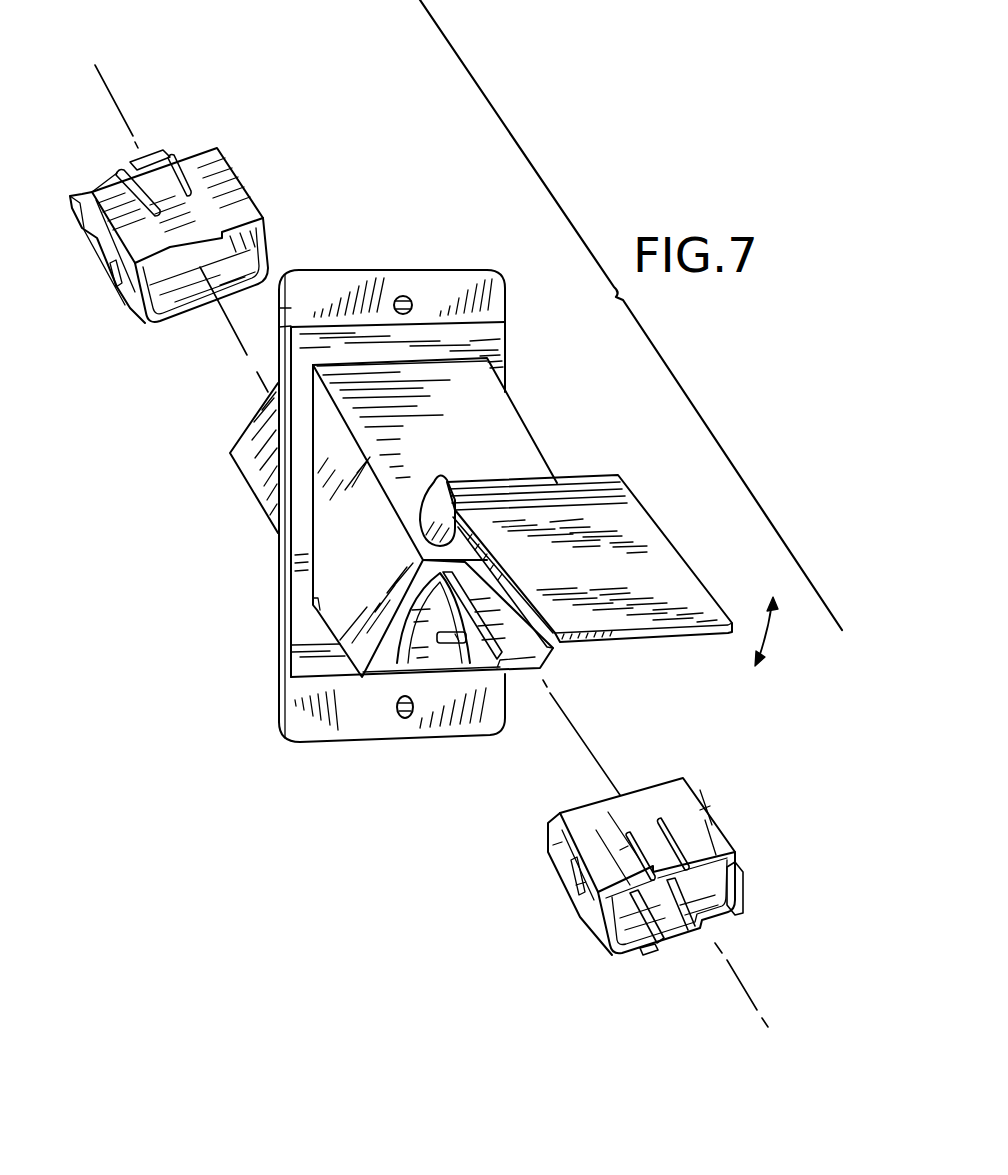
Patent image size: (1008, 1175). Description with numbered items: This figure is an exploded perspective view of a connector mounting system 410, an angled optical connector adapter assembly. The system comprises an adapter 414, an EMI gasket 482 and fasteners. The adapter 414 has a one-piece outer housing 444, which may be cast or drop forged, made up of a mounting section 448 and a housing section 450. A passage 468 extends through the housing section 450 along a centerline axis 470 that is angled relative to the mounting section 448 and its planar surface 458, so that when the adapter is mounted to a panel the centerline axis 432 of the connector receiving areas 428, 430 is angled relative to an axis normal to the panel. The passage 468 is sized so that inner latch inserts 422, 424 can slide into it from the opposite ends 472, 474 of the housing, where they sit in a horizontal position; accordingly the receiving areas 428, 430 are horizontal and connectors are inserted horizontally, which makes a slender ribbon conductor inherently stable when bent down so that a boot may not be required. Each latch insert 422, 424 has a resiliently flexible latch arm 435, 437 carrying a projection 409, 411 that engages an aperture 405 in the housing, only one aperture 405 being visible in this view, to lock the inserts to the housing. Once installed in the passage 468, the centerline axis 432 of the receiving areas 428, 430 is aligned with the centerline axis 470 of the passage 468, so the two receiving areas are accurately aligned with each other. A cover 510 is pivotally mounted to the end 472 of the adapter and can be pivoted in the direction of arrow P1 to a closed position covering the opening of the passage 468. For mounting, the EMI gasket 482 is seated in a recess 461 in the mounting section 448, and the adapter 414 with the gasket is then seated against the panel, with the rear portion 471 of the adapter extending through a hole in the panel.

The aperture 405 is at (462, 643).
The projection 409 is at (673, 942).
The connector mounting system 410 is at (196, 588).
The projection 411 is at (130, 168).
The adapter 414 is at (278, 703).
The inner latch insert 422 is at (553, 853).
The inner latch insert 424 is at (122, 297).
The connector receiving area 428 is at (728, 870).
The connector receiving area 430 is at (253, 236).
The centerline axis 432 is at (118, 104).
The latch arm 435 is at (660, 848).
The latch arm 437 is at (163, 183).
The outer housing 444 is at (374, 726).
The mounting section 448 is at (336, 288).
The housing section 450 is at (270, 496).
The planar surface 458 is at (457, 283).
The recess 461 is at (278, 357).
The passage 468 is at (553, 648).
The centerline axis 470 is at (583, 737).
The rear portion 471 is at (508, 432).
The end 472 is at (383, 648).
The end 474 is at (247, 423).
The EMI gasket 482 is at (492, 334).
The cover 510 is at (630, 522).
The arrow P1 is at (776, 636).